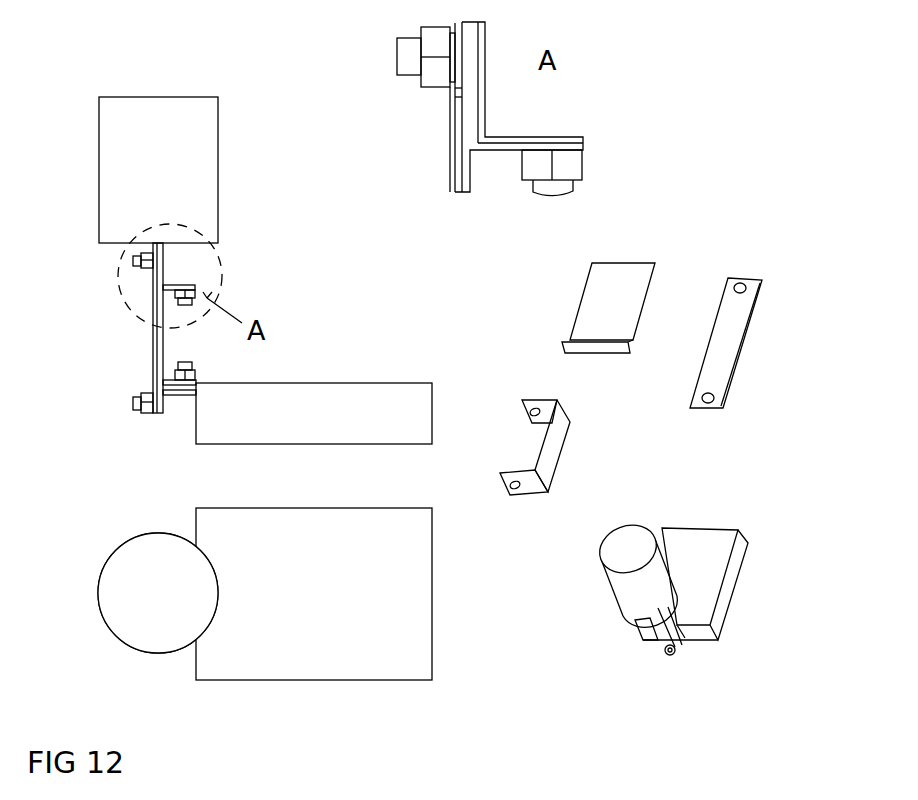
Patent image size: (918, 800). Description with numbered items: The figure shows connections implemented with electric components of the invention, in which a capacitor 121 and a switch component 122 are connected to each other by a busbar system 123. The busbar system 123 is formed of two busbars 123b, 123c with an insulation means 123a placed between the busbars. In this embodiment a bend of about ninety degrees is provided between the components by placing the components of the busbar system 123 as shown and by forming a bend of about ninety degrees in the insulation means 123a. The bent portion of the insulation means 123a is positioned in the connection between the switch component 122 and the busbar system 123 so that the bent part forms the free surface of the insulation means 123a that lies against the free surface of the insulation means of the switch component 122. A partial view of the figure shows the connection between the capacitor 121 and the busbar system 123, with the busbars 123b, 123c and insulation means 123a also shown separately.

The capacitor 121 is at (147, 136).
The switch component 122 is at (415, 426).
The busbar system 123 is at (123, 351).
The insulation means 123a is at (657, 290).
The busbar 123b is at (745, 387).
The busbar 123c is at (575, 450).